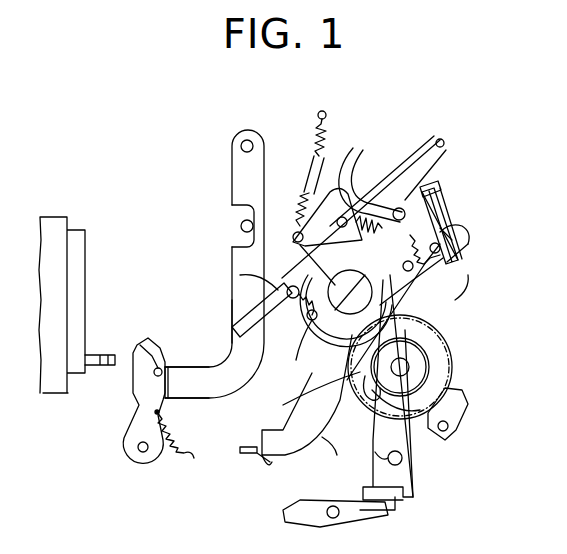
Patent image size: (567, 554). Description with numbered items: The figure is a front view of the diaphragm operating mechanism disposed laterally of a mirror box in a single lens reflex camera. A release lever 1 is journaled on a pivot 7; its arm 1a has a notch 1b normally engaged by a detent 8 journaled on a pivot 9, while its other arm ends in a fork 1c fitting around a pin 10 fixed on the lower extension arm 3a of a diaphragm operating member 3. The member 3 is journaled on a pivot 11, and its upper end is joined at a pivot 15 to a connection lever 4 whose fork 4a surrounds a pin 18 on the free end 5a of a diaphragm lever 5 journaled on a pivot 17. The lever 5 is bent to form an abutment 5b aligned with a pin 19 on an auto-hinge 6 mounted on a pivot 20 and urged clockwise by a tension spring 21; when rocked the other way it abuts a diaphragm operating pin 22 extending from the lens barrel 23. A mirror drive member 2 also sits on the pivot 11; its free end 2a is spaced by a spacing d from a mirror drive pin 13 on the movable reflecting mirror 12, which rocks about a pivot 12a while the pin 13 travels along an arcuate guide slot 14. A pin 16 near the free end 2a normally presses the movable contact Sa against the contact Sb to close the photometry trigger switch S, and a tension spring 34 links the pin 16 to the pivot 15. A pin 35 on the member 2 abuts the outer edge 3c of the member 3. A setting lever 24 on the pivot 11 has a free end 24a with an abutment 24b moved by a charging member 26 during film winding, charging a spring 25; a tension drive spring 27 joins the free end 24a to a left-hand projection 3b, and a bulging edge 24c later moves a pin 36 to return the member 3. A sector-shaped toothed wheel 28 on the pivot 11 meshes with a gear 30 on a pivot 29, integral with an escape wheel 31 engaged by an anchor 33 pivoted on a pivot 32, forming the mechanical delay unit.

The release lever 1 is at (372, 447).
The arm of release lever 1a is at (412, 476).
The notch 1b is at (403, 505).
The fork 1c is at (380, 435).
The mirror drive member 2 is at (400, 340).
The free end of mirror drive member 2a is at (436, 282).
The diaphragm operating member 3 is at (343, 190).
The lower extension arm 3a is at (283, 412).
The left-hand projection 3b is at (290, 268).
The outer edge of bulging portion 3c is at (392, 290).
The connection lever 4 is at (287, 208).
The fork 4a is at (236, 212).
The diaphragm lever 5 is at (232, 252).
The free end of diaphragm lever 5a is at (233, 342).
The abutment 5b is at (183, 402).
The auto-hinge 6 is at (133, 380).
The pivot 7 is at (378, 460).
The detent 8 is at (365, 515).
The pivot 9 is at (334, 518).
The pin 10 is at (370, 392).
The pivot 11 is at (313, 344).
The movable reflecting mirror 12 is at (408, 198).
The pivot 12a is at (444, 140).
The mirror drive pin 13 is at (436, 192).
The elongate arcuate guide slot 14 is at (362, 150).
The pivot 15 is at (337, 220).
The pin 16 is at (450, 262).
The pivot 17 is at (240, 147).
The pin 18 is at (241, 226).
The pin 19 is at (152, 358).
The pivot 20 is at (138, 450).
The tension spring 21 is at (186, 455).
The diaphragm operating pin 22 is at (110, 353).
The lens barrel 23 is at (70, 396).
The setting lever 24 is at (310, 370).
The free end of setting lever 24a is at (336, 450).
The abutment 24b is at (272, 465).
The bulging edge 24c is at (250, 298).
The charging spring 25 is at (312, 136).
The charging member 26 is at (250, 453).
The tension drive spring 27 is at (296, 297).
The sector-shaped toothed wheel 28 is at (428, 348).
The pivot 29 is at (409, 367).
The gear 30 is at (455, 352).
The escape wheel 31 is at (452, 380).
The pivot 32 is at (446, 431).
The anchor 33 is at (465, 410).
The tension spring 34 is at (352, 190).
The pin 35 is at (452, 300).
The pin 36 is at (240, 275).
The photometry trigger switch S is at (460, 193).
The movable contact Sa is at (458, 228).
The movable contact Sb is at (468, 248).
The spacing d is at (445, 212).